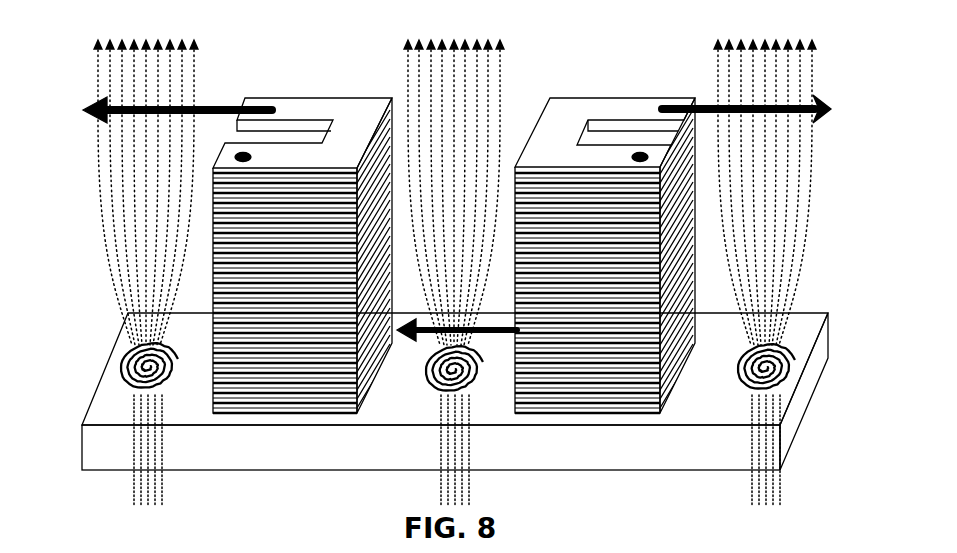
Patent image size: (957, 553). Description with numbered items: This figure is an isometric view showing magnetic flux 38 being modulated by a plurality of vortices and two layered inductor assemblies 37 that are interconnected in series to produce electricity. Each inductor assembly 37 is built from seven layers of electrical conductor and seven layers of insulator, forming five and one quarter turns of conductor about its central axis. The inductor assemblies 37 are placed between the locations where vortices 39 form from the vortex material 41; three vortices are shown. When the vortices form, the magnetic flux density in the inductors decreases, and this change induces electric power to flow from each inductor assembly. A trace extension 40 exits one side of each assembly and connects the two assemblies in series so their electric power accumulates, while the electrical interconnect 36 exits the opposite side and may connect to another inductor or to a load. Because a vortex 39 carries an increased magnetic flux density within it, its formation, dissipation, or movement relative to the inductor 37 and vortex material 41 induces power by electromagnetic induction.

The electrical interconnect 36 is at (215, 103).
The inductor assembly 37 is at (353, 115).
The magnetic flux 38 is at (503, 113).
The vortex 39 is at (175, 378).
The trace extension 40 is at (405, 338).
The vortex material 41 is at (528, 452).